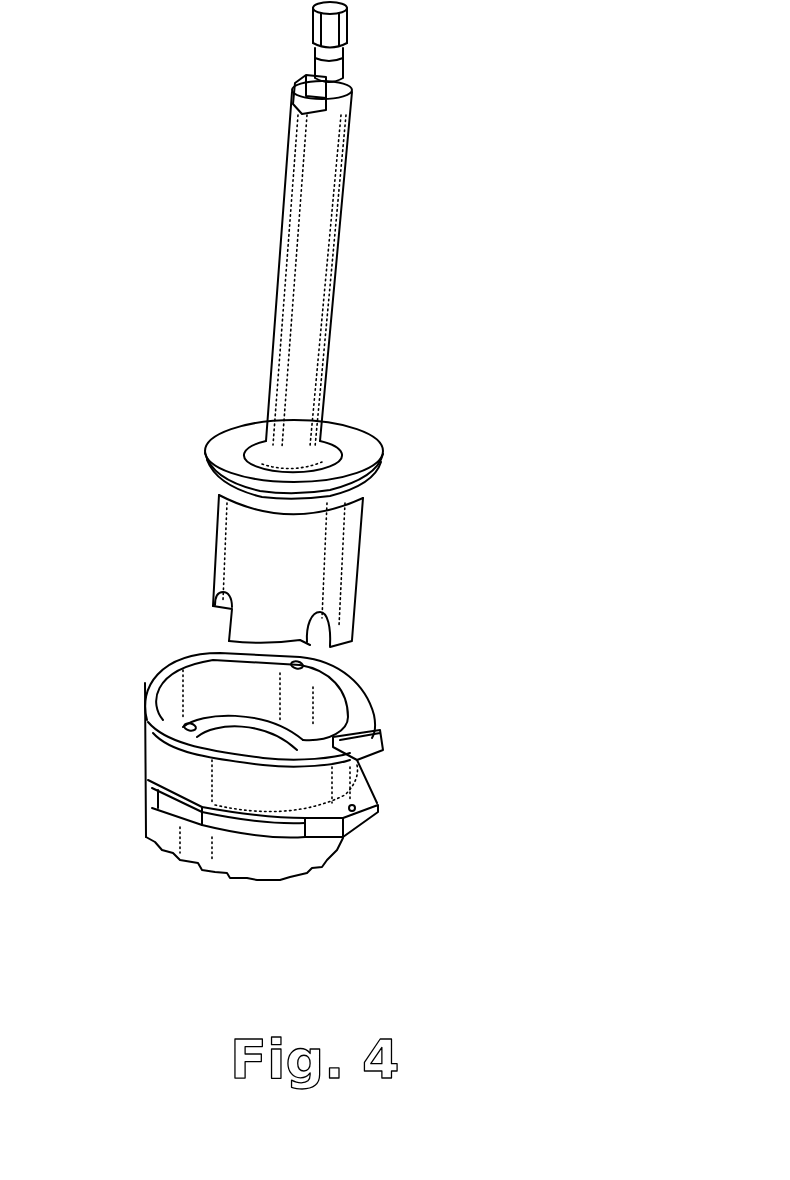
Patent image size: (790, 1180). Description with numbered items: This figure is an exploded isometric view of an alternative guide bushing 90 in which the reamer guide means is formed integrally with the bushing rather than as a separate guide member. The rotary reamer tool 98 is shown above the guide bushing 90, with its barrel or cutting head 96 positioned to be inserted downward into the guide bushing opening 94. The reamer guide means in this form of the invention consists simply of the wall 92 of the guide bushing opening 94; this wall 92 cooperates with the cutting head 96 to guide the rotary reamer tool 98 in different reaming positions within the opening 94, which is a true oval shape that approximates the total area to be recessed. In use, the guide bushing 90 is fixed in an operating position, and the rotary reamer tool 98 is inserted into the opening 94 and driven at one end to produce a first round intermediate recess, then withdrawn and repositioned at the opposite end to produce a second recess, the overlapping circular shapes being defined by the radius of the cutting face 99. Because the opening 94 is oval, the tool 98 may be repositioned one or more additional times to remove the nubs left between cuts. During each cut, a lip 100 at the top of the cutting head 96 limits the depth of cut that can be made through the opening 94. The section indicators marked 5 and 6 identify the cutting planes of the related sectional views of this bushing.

The rotary reamer tool 98 is at (385, 270).
The lip 100 is at (378, 492).
The cutting head 96 is at (243, 548).
The cutting face 99 is at (340, 651).
The guide bushing 90 is at (357, 702).
The guide bushing opening 94 is at (198, 687).
The wall 92 is at (248, 733).
The section line 6- 6 is at (147, 662).
The section line 5- 5 is at (130, 808).